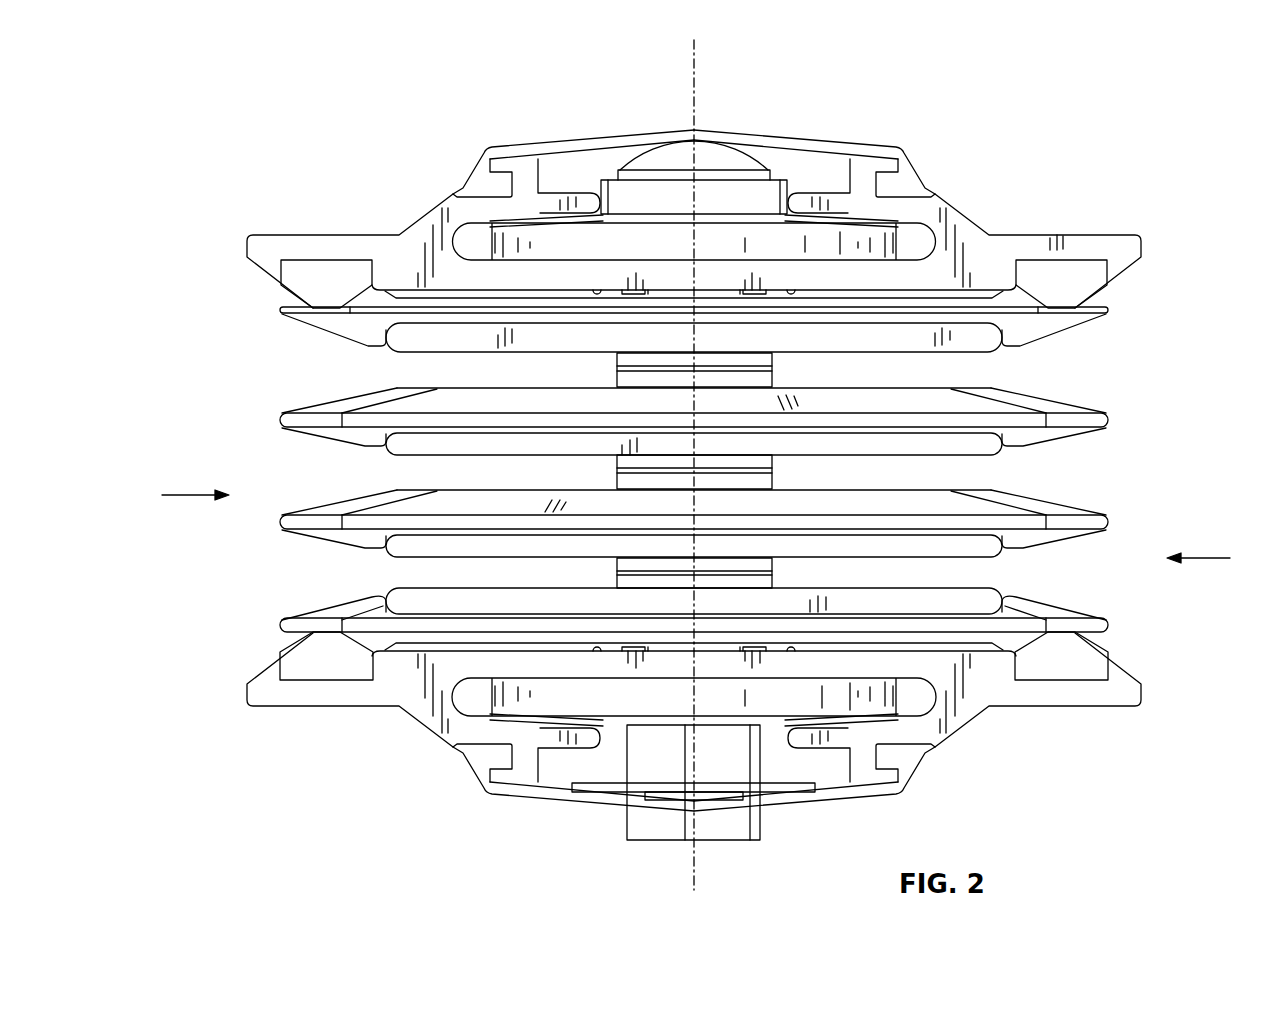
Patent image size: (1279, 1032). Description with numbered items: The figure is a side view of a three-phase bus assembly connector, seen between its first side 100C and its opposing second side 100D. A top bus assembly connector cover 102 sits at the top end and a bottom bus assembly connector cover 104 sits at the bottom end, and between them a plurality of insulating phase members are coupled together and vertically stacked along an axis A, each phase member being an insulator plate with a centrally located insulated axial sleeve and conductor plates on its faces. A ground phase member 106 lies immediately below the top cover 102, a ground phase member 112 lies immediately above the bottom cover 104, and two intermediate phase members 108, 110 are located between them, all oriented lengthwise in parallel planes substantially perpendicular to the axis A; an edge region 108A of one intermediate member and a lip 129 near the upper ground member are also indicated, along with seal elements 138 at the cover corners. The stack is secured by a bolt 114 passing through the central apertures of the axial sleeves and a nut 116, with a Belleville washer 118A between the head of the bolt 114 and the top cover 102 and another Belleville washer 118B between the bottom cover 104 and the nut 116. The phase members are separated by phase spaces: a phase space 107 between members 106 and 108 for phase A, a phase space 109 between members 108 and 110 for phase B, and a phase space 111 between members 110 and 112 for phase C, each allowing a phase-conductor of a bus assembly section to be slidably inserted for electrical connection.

The axis A is at (692, 80).
The top bus assembly connector cover 102 is at (1130, 248).
The bottom bus assembly connector cover 104 is at (1093, 708).
The ground phase member 106 is at (1103, 318).
The phase space 107 is at (398, 367).
The intermediate phase member 108 is at (1103, 418).
The plate edge portion 108A is at (348, 407).
The phase space 109 is at (398, 470).
The intermediate phase member 110 is at (1103, 520).
The phase space 111 is at (398, 572).
The ground phase member 112 is at (1103, 622).
The bolt 114 is at (727, 157).
The nut 116 is at (723, 833).
The washer 118A is at (878, 247).
The washer 118B is at (500, 695).
The plate lip 129 is at (283, 313).
The seal wedge 138 is at (330, 272).
The first side 100C is at (185, 492).
The second opposing side 100D is at (1197, 557).